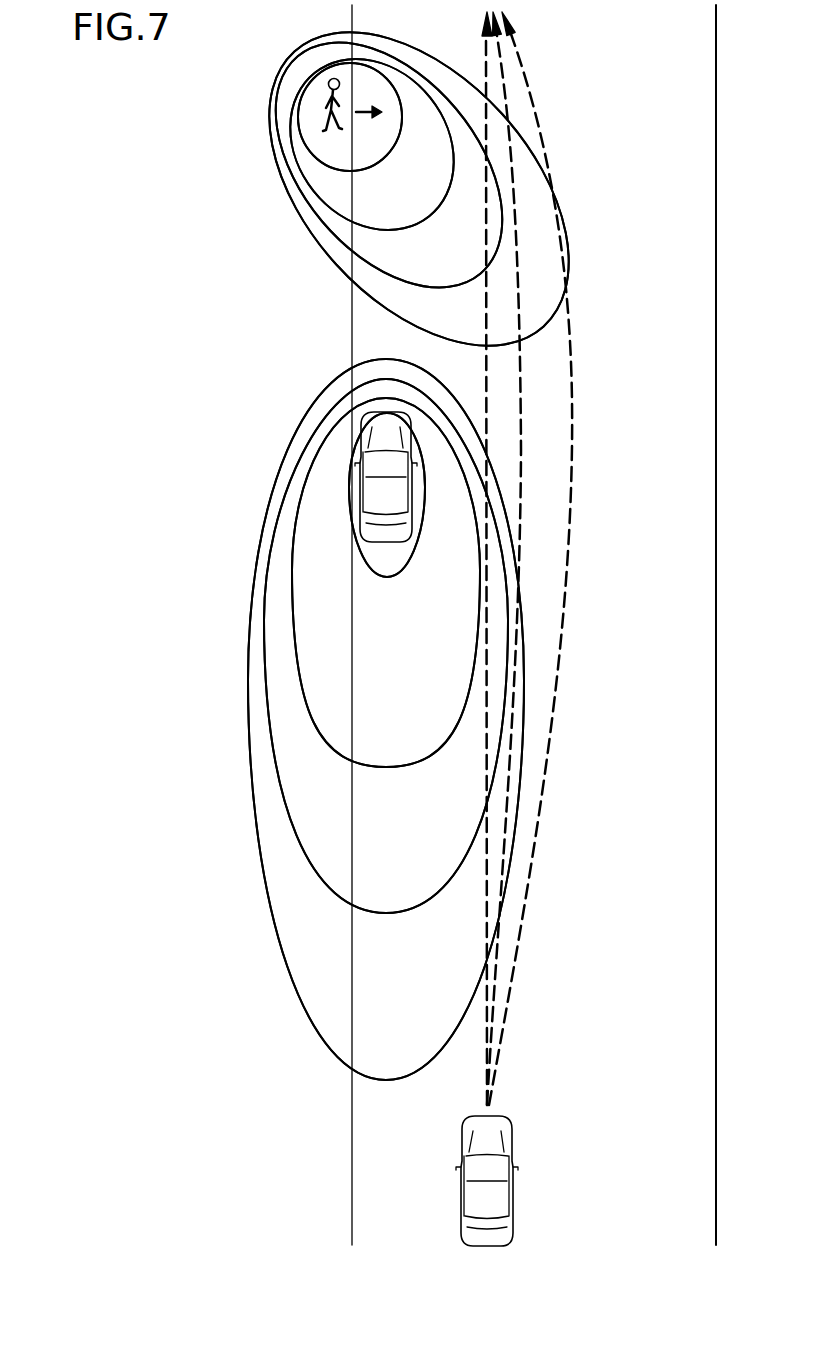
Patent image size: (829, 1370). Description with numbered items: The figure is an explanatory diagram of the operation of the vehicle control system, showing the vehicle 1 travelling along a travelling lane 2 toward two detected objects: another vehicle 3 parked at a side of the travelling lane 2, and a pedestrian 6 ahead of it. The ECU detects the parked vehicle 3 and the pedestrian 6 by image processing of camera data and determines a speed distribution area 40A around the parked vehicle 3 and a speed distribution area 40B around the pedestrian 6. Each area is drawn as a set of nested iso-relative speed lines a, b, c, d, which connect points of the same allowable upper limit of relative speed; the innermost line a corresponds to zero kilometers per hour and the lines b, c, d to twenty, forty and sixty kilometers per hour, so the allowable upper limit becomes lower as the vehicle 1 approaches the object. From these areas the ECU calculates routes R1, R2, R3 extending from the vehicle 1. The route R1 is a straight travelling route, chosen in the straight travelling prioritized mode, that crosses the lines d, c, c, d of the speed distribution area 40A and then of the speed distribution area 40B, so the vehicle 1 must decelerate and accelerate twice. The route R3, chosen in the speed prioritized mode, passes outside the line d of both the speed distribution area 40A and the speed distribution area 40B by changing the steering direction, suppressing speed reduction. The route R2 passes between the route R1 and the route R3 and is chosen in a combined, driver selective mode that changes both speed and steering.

The vehicle 1 is at (514, 1194).
The travelling lane 2 is at (697, 92).
The vehicle 3 is at (374, 487).
The pedestrian 6 is at (326, 98).
The speed distribution area 40A is at (273, 498).
The speed distribution area 40B is at (268, 128).
The iso-relative speed line a is at (350, 525).
The iso-relative speed line b is at (307, 674).
The iso-relative speed line c is at (284, 786).
The iso-relative speed line d is at (260, 864).
The route R1 is at (487, 384).
The route R2 is at (522, 361).
The route R3 is at (572, 325).